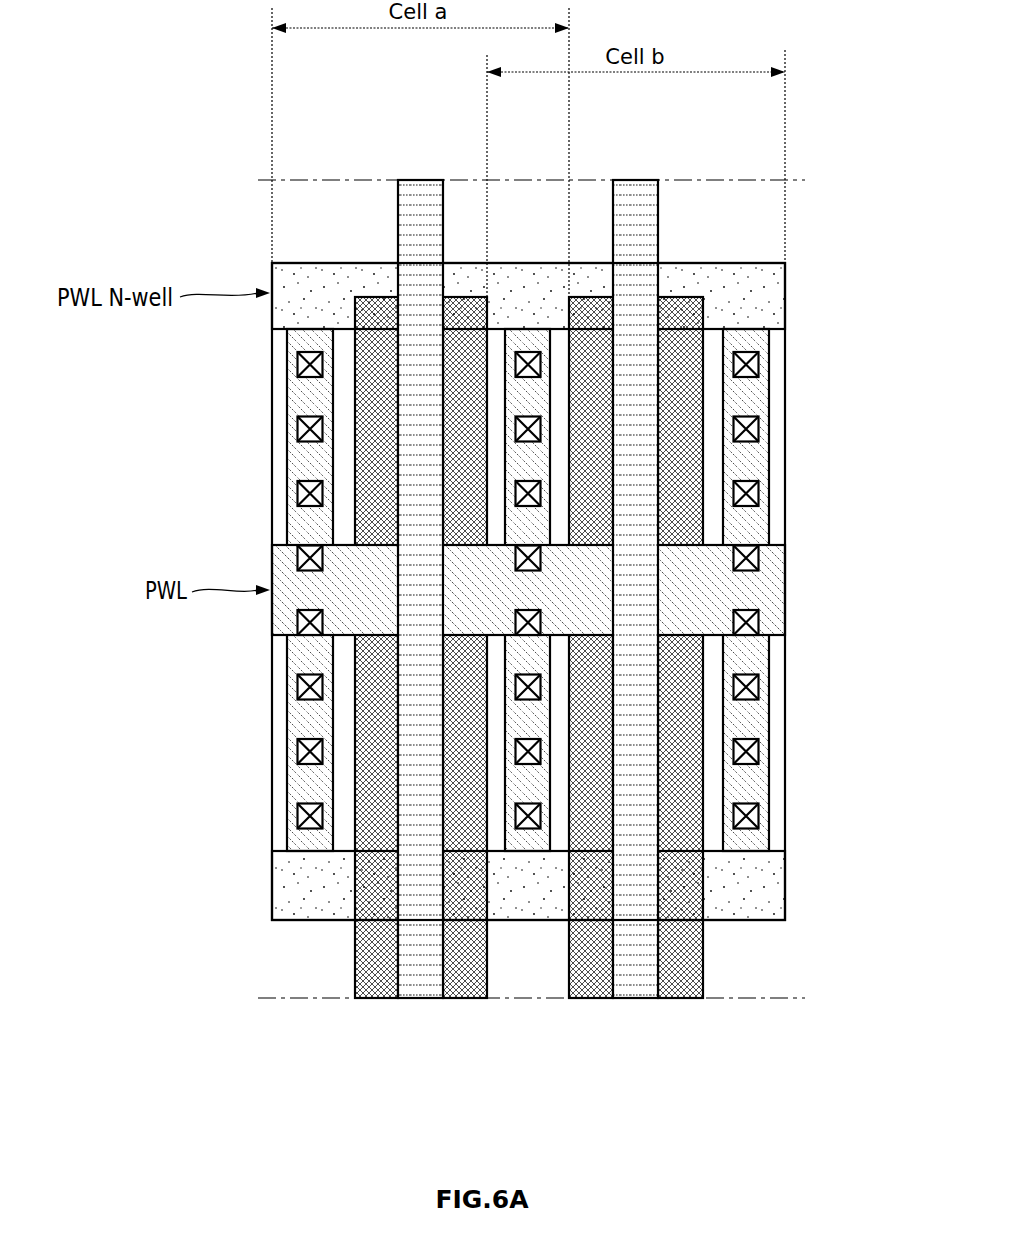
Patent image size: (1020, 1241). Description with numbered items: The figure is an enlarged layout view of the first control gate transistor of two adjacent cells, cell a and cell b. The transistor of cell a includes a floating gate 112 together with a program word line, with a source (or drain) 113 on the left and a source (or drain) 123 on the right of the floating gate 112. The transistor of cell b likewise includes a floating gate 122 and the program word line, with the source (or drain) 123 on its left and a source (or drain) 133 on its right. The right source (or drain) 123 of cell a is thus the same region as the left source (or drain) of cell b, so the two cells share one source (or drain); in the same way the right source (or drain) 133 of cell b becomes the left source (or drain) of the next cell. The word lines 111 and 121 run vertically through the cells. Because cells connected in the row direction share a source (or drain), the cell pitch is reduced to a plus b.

The first word line 111 is at (428, 193).
The floating gate 112 is at (381, 992).
The source (or drain) 113 is at (293, 790).
The second word line 121 is at (633, 192).
The floating gate 122 is at (593, 298).
The source (or drain) 123 is at (530, 845).
The source (or drain) 133 is at (752, 720).